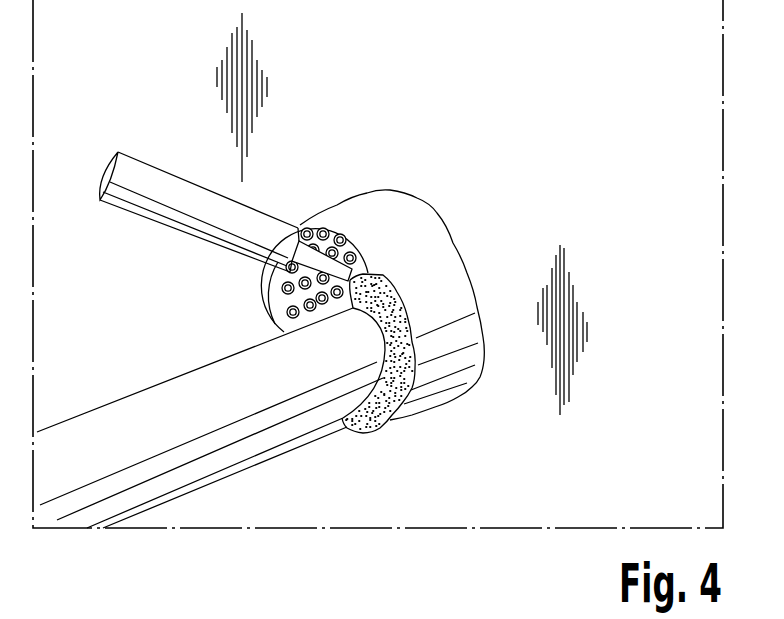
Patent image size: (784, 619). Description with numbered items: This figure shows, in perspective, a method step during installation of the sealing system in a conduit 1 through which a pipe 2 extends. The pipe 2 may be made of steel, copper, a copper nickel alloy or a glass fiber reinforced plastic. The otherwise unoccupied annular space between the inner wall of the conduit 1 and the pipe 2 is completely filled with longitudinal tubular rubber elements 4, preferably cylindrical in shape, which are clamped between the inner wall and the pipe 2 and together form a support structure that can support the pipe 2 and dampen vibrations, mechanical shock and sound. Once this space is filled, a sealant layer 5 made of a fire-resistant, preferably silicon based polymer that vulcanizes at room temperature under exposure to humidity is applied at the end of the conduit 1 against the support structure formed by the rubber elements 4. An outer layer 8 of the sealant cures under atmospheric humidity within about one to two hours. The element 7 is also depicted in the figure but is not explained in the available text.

The conduit 1 is at (378, 200).
The pipe 2 is at (128, 417).
The rubber element 4 is at (320, 222).
The sealant layer 5 is at (392, 433).
The plug rod 7 is at (160, 188).
The outer layer 8 is at (387, 295).